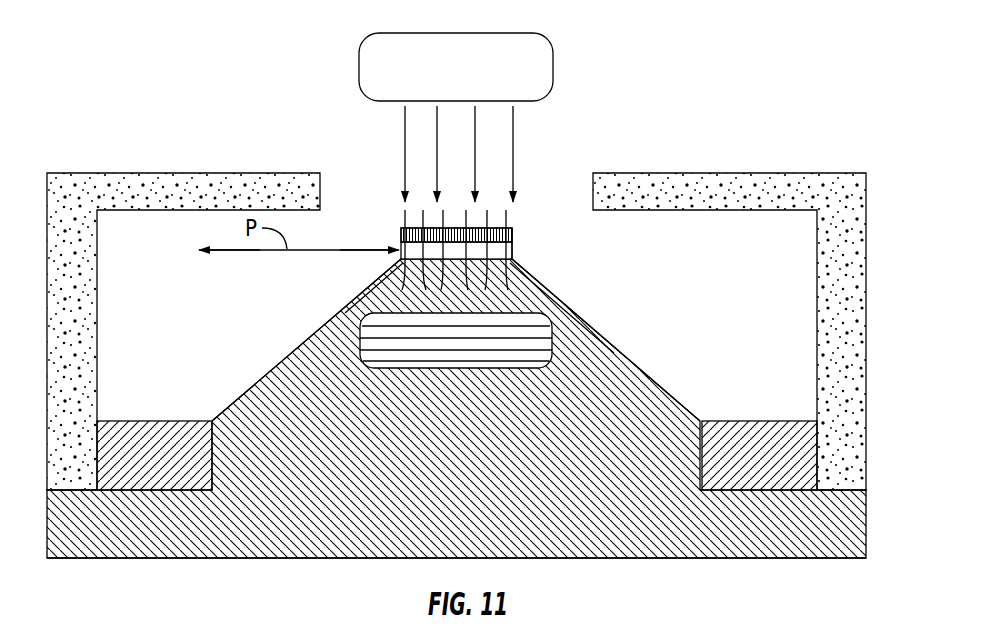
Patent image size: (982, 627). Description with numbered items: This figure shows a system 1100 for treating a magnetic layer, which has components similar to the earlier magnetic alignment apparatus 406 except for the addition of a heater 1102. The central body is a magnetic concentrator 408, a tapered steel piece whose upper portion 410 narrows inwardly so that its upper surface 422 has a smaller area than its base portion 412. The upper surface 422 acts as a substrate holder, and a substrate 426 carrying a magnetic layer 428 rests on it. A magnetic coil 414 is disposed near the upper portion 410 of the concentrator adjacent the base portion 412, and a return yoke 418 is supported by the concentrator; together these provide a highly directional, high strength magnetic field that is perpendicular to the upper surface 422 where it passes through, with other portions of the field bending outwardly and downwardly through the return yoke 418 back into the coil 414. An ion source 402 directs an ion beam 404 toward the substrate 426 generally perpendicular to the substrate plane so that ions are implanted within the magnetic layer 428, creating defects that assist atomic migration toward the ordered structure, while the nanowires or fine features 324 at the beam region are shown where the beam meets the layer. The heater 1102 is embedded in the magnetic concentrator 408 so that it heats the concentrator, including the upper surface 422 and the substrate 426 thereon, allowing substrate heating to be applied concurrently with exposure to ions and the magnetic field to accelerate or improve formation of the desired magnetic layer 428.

The system 1100 is at (695, 135).
The ion source 402 is at (358, 58).
The ion beam 404 is at (366, 147).
The return yoke 418 is at (200, 172).
The magnetic alignment apparatus 406 is at (270, 559).
The base portion 412 is at (692, 559).
The magnetic concentrator 408 is at (294, 350).
The upper portion 410 is at (611, 343).
The magnetic coil 414 is at (180, 420).
The heater 1102 is at (373, 336).
The magnetic layer 428 is at (400, 234).
The upper surface 422 is at (419, 262).
The substrate 426 is at (512, 249).
The nanowires 324 is at (520, 220).